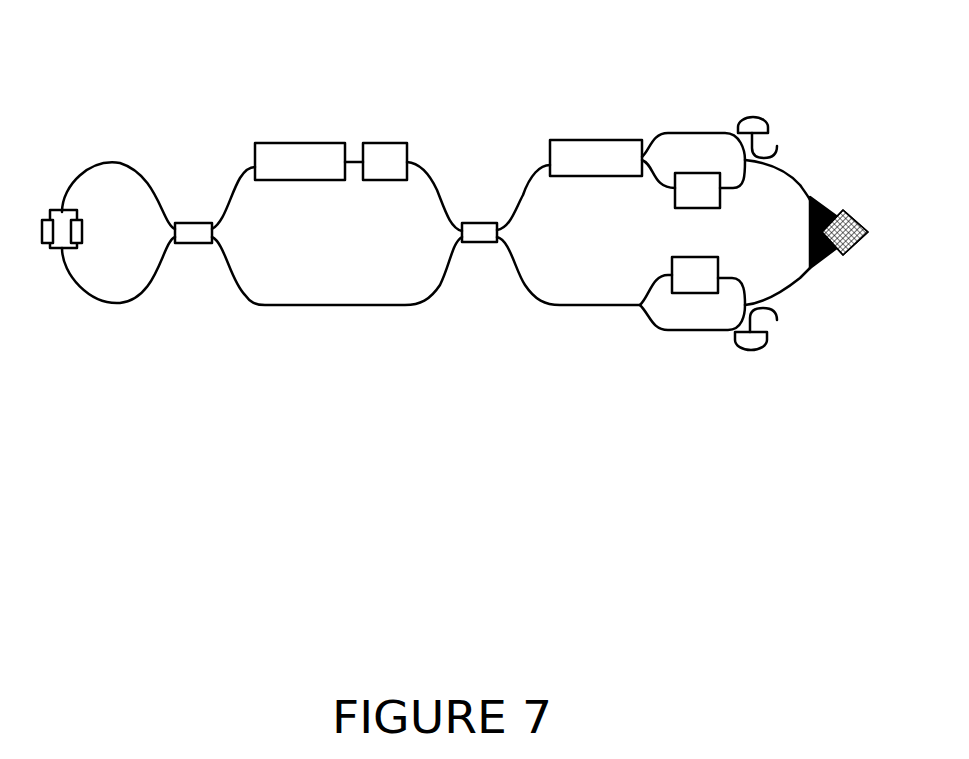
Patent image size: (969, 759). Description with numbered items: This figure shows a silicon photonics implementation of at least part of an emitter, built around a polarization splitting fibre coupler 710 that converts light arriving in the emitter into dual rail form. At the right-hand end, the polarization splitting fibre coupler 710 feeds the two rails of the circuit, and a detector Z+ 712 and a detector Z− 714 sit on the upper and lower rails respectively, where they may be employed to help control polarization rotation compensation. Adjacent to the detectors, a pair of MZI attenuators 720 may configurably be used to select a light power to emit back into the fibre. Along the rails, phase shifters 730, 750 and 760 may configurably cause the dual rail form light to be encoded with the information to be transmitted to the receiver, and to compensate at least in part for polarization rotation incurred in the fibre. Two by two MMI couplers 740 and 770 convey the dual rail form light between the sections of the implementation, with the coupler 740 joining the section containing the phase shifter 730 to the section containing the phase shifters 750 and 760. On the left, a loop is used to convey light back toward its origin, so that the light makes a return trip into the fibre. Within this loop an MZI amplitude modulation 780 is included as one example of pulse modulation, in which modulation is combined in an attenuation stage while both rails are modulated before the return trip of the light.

The polarization splitting fibre coupler 710 is at (823, 195).
The detector Z+ 712 is at (755, 120).
The detector Z− 714 is at (750, 349).
The MZI attenuators 720 is at (695, 209).
The phase shifter 730 is at (596, 158).
The 2×2 MMI coupler 740 is at (477, 233).
The phase shifter 750 is at (385, 152).
The phase shifter 760 is at (300, 161).
The 2×2 MMI coupler 770 is at (192, 232).
The MZI amplitude modulation 780 is at (64, 214).